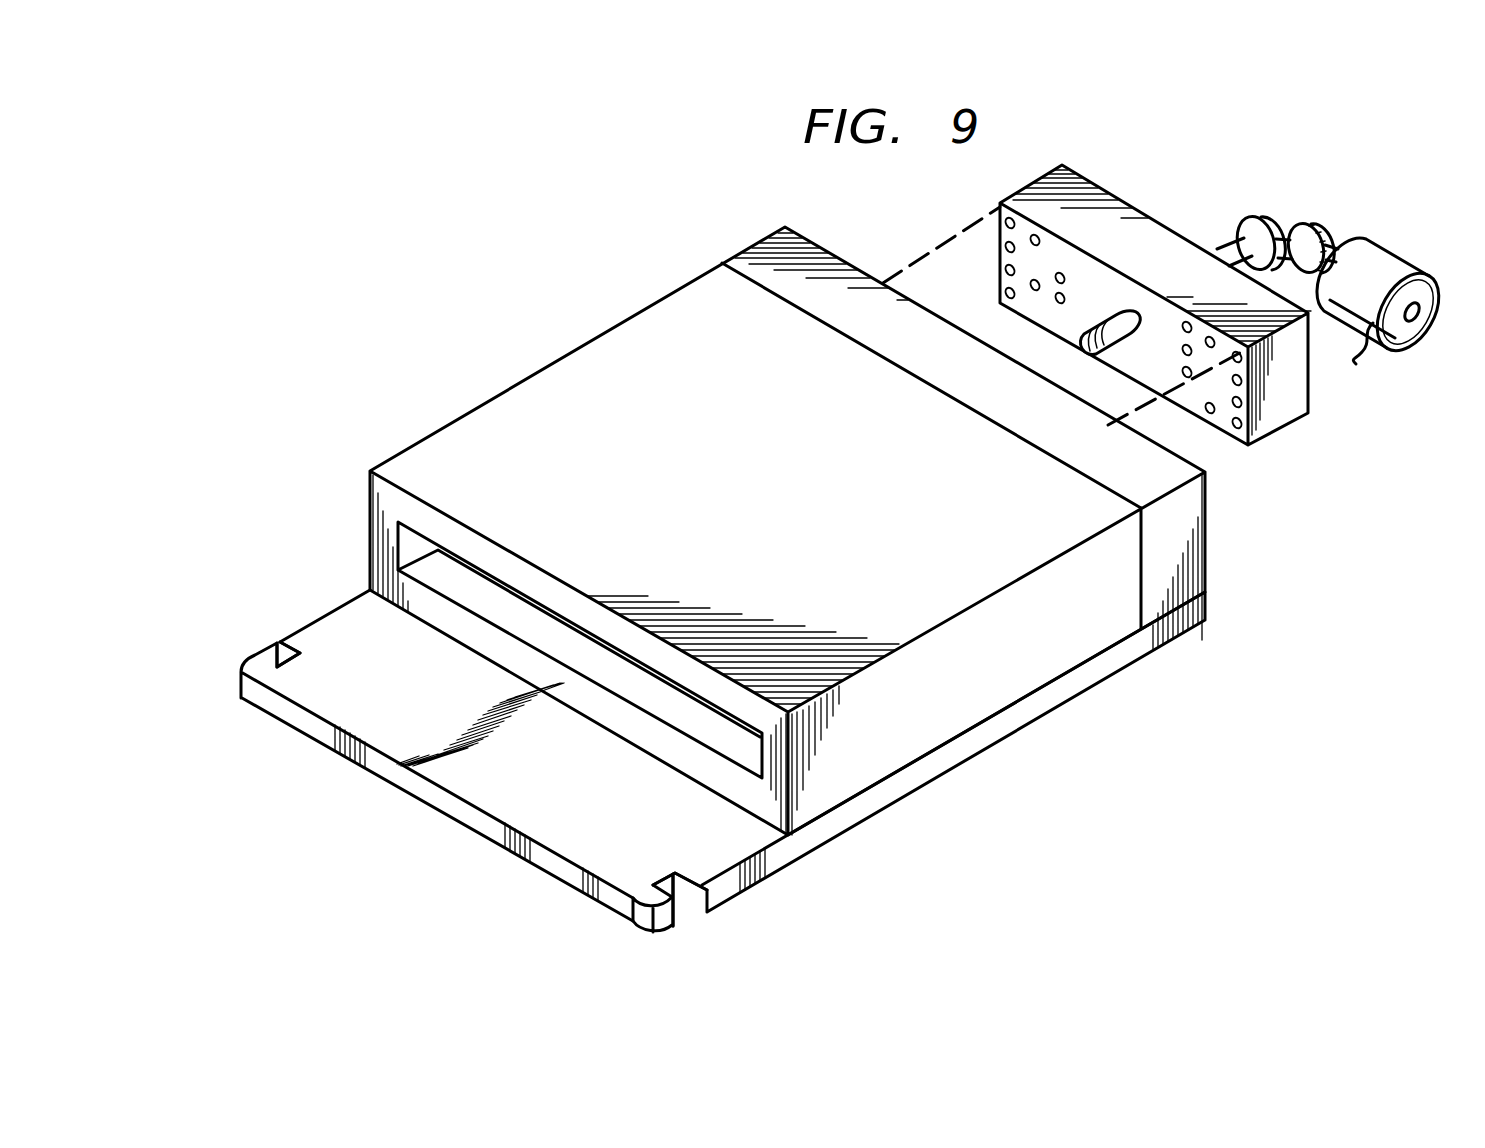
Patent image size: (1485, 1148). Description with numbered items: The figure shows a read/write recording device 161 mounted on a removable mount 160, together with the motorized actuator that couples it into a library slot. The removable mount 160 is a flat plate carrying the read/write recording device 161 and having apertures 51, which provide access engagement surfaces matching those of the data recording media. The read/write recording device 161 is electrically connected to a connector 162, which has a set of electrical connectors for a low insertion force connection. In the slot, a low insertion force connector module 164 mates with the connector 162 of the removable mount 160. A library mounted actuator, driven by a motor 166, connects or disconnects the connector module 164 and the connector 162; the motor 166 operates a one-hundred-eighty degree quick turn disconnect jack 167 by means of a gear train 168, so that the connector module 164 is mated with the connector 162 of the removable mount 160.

The removable mount 160 is at (853, 813).
The read/write recording device 161 is at (542, 377).
The connector 162 is at (768, 247).
The low insertion force connector module 164 is at (1123, 213).
The motor 166 is at (1383, 263).
The 180 degree quick turn disconnect jack 167 is at (1110, 313).
The gear train 168 is at (1299, 206).
The apertures 51 is at (269, 650).